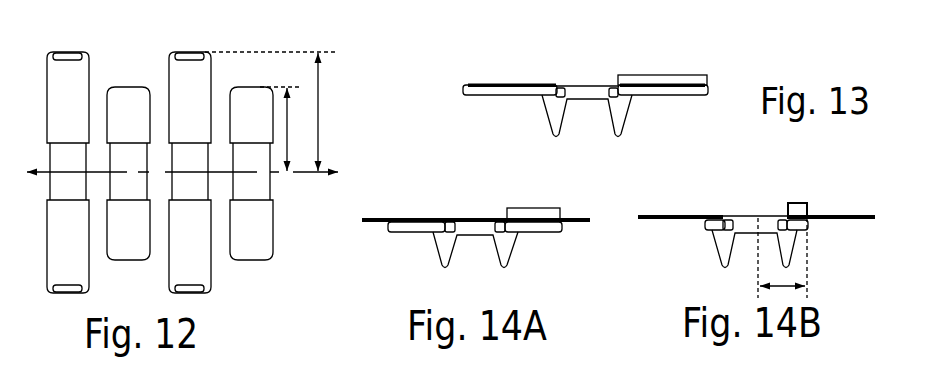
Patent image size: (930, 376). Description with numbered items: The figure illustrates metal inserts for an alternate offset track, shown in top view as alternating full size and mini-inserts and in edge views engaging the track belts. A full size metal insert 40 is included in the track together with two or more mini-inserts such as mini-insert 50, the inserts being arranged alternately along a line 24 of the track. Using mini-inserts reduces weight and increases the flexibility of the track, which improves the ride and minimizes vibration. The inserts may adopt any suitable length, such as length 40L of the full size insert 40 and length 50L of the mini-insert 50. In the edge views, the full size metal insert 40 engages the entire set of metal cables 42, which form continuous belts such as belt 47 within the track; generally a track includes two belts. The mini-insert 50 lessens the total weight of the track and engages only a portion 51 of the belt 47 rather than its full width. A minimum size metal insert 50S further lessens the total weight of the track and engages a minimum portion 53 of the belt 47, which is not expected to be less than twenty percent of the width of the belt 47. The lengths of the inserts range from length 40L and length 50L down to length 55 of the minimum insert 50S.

In FIG. 12, the metal insert 40 is at (84, 58).
In FIG. 13, the metal insert 40 is at (624, 104).
In FIG. 12, the mini-insert 50 is at (118, 89).
In FIG. 14A, the mini-insert 50 is at (509, 242).
In FIG. 12, the fold line axis 24 is at (40, 170).
In FIG. 12, the length 40L is at (320, 100).
In FIG. 12, the length 50L is at (289, 148).
In FIG. 13, the metal cables 42 is at (540, 80).
In FIG. 14A, the metal cables 42 is at (430, 212).
In FIG. 14B, the metal cables 42 is at (708, 212).
In FIG. 13, the belt 47 is at (627, 74).
In FIG. 14A, the belt 47 is at (584, 212).
In FIG. 14B, the belt 47 is at (862, 225).
In FIG. 14A, the portion 51 is at (512, 207).
In FIG. 14B, the minimum portion 53 is at (795, 202).
In FIG. 14B, the minimum insert 50S is at (718, 245).
In FIG. 14B, the length 55 is at (790, 284).